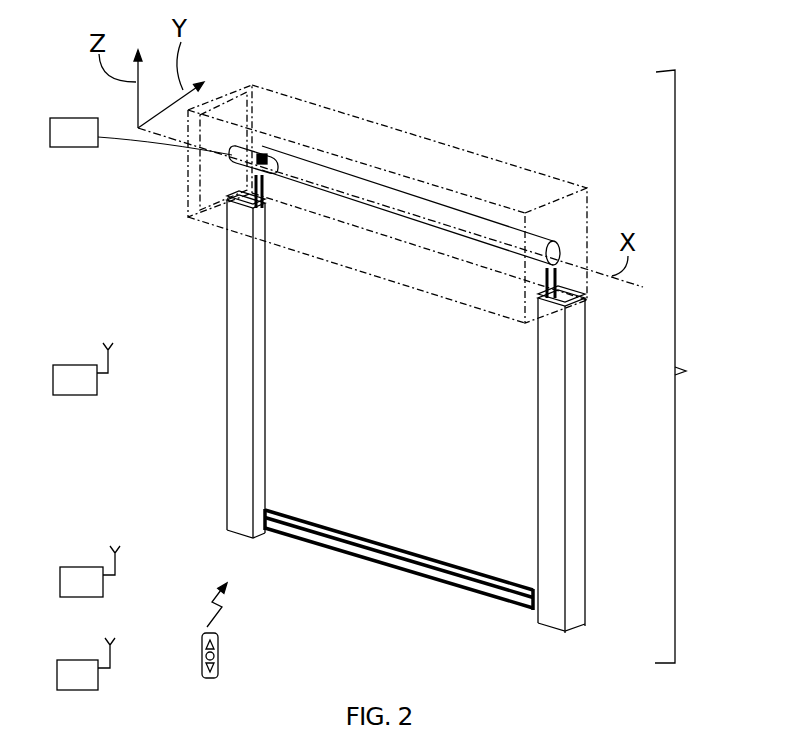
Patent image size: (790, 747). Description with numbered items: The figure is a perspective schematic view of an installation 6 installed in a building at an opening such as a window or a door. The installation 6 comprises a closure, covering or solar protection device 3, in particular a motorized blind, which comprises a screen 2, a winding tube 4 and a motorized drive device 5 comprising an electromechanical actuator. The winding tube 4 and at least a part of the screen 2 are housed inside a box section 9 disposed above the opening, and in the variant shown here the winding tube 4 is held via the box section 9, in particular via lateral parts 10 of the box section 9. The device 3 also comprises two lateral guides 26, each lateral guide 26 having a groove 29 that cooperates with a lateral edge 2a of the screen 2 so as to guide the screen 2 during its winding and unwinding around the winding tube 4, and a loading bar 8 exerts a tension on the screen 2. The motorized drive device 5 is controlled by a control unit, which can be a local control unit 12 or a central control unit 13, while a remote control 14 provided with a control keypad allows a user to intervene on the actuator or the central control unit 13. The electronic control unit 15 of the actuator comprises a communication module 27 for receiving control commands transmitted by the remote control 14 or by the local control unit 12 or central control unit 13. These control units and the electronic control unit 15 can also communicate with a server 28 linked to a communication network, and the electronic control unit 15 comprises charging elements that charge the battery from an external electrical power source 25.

The screen 2 is at (399, 581).
The lateral edge of the screen 2a is at (263, 197).
The closure, covering or solar protection device 3 is at (196, 442).
The winding tube 4 is at (370, 193).
The motorized drive device 5 is at (293, 142).
The installation 6 is at (681, 366).
The loading bar 8 is at (462, 586).
The box section 9 is at (515, 182).
The lateral parts of the box section 10 is at (189, 190).
The local control unit 12 is at (79, 577).
The central control unit 13 is at (73, 668).
The remote control 14 is at (220, 657).
The electronic control unit 15 is at (238, 157).
The external electrical power source 25 is at (76, 128).
The lateral guides 26 is at (237, 512).
The communication module 27 is at (259, 156).
The server 28 is at (72, 372).
The groove 29 is at (252, 202).